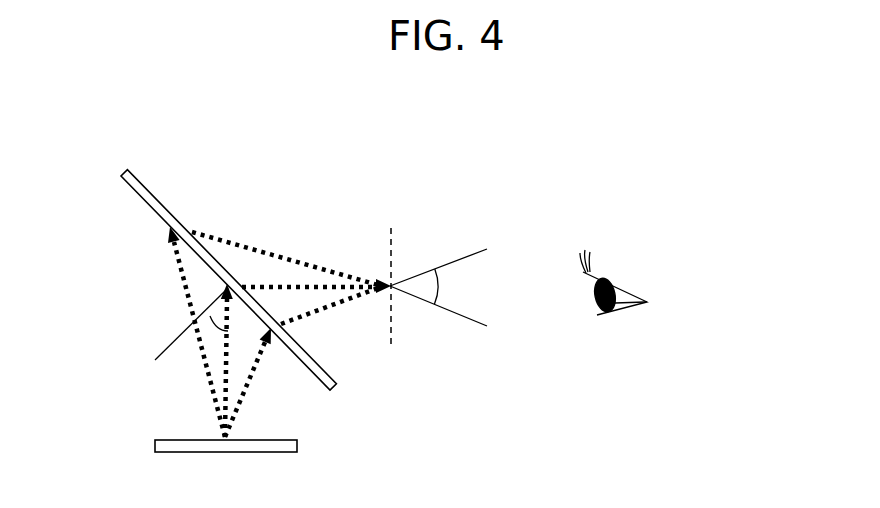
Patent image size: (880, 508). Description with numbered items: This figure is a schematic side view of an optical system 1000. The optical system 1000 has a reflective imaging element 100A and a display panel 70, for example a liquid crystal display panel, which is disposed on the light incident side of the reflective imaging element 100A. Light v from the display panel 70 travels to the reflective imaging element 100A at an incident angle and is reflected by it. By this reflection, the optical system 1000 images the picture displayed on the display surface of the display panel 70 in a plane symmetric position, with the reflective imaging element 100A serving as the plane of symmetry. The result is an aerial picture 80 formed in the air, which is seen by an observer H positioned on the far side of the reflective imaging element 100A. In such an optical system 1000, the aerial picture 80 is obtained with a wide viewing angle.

The optical system 1000 is at (610, 143).
The reflective imaging element 100A is at (340, 386).
The aerial picture 80 is at (391, 228).
The display panel 70 is at (155, 443).
The observer H is at (647, 302).
The light v is at (213, 413).